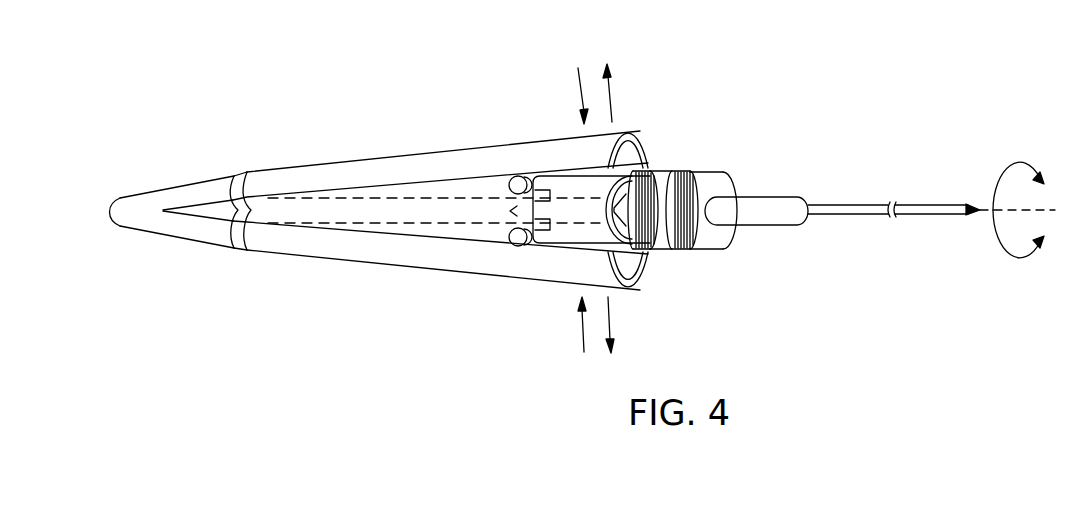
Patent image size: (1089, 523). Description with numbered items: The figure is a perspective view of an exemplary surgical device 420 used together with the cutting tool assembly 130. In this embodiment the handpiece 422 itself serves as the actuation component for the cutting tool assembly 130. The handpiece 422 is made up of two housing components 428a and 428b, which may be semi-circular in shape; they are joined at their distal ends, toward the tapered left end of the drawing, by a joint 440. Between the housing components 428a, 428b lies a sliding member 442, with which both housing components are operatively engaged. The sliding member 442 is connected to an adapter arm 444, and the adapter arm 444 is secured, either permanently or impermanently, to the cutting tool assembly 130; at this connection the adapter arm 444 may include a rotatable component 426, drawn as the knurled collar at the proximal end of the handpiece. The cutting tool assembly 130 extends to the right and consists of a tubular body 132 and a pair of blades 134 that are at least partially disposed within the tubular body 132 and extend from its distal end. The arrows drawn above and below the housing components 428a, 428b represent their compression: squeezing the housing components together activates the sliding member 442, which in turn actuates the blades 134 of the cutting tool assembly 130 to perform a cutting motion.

The surgical device 420 is at (433, 76).
The handpiece 422 is at (317, 165).
The joint 440 is at (110, 213).
The adapter arm 444 is at (412, 207).
The sliding member 442 is at (465, 188).
The housing component 428a is at (640, 131).
The housing component 428b is at (638, 290).
The rotatable component 426 is at (665, 170).
The cutting tool assembly 130 is at (874, 161).
The tubular body 132 is at (915, 216).
The blades 134 is at (978, 216).